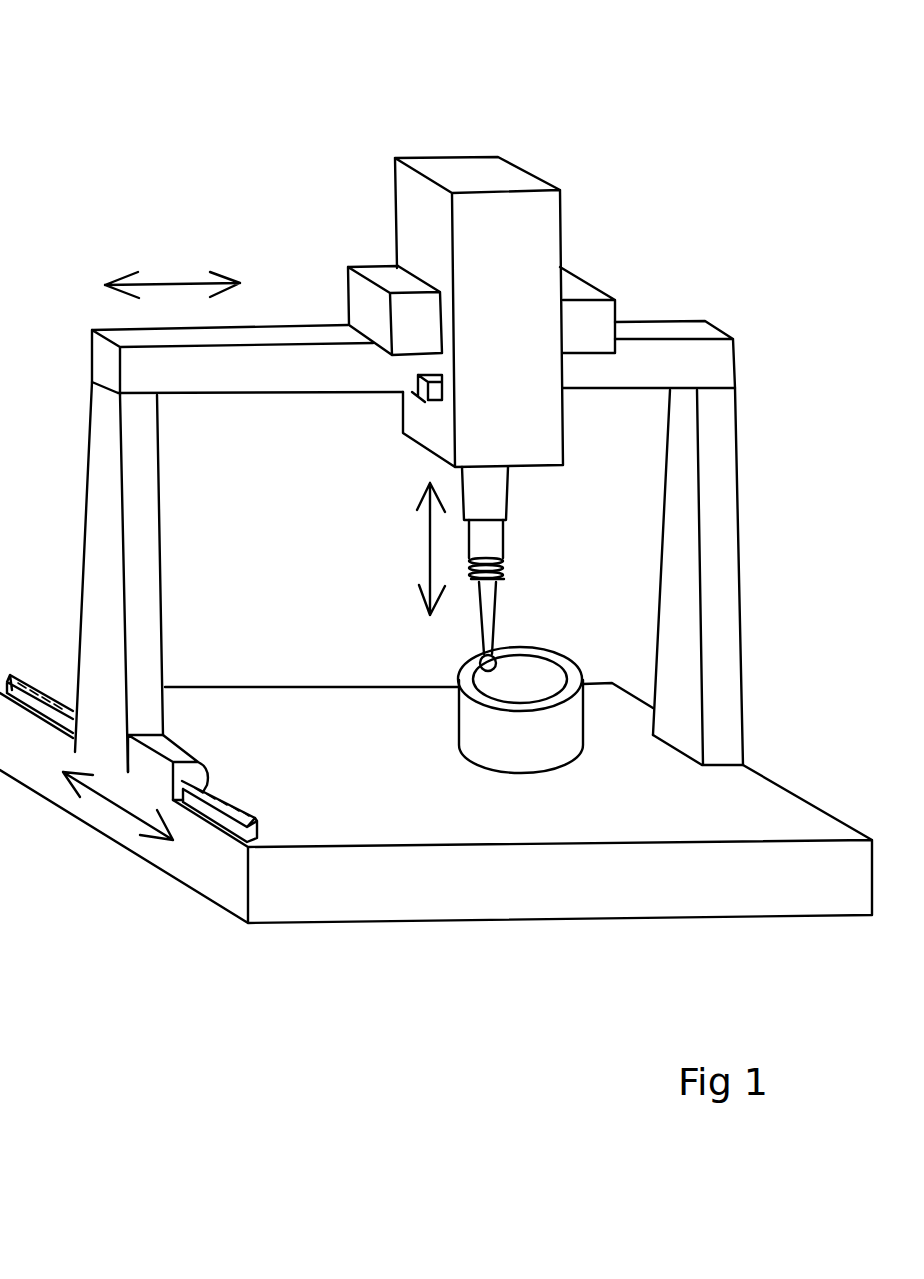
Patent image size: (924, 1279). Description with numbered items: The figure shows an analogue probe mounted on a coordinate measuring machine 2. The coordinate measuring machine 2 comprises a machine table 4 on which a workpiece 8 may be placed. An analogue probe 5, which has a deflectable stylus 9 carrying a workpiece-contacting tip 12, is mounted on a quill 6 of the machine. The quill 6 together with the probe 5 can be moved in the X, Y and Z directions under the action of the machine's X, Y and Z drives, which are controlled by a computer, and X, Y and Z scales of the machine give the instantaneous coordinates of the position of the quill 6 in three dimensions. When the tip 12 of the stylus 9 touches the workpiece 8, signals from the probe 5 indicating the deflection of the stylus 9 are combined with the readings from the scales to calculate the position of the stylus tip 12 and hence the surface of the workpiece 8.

The coordinate measuring machine 2 is at (182, 185).
The machine table 4 is at (295, 883).
The quill 6 is at (488, 501).
The analogue probe 5 is at (518, 560).
The deflectable stylus 9 is at (468, 625).
The workpiece-contacting tip 12 is at (487, 665).
The workpiece 8 is at (543, 738).